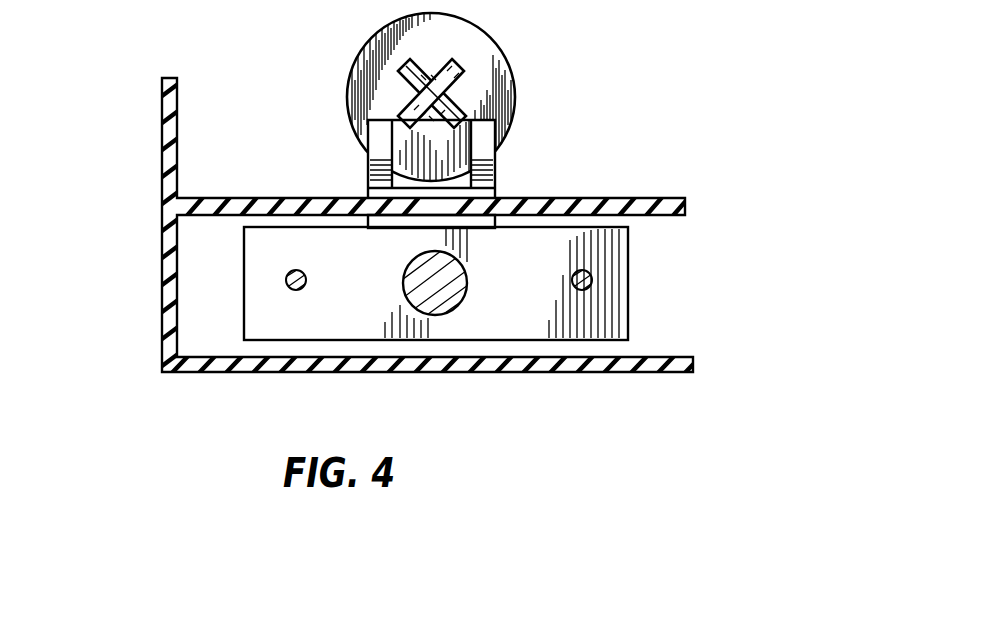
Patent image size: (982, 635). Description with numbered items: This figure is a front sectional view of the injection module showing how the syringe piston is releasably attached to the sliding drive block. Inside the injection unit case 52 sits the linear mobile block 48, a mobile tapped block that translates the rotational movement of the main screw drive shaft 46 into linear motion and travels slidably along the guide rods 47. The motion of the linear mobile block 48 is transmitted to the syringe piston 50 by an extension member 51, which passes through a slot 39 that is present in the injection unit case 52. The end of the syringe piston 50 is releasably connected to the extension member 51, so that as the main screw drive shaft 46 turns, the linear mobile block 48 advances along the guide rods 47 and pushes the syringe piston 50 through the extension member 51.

The slot 39 is at (421, 199).
The main screw drive shaft 46 is at (437, 285).
The guide rods 47 is at (287, 281).
The linear mobile block 48 is at (534, 320).
The syringe piston 50 is at (514, 84).
The extension member 51 is at (496, 177).
The injection unit case 52 is at (162, 290).